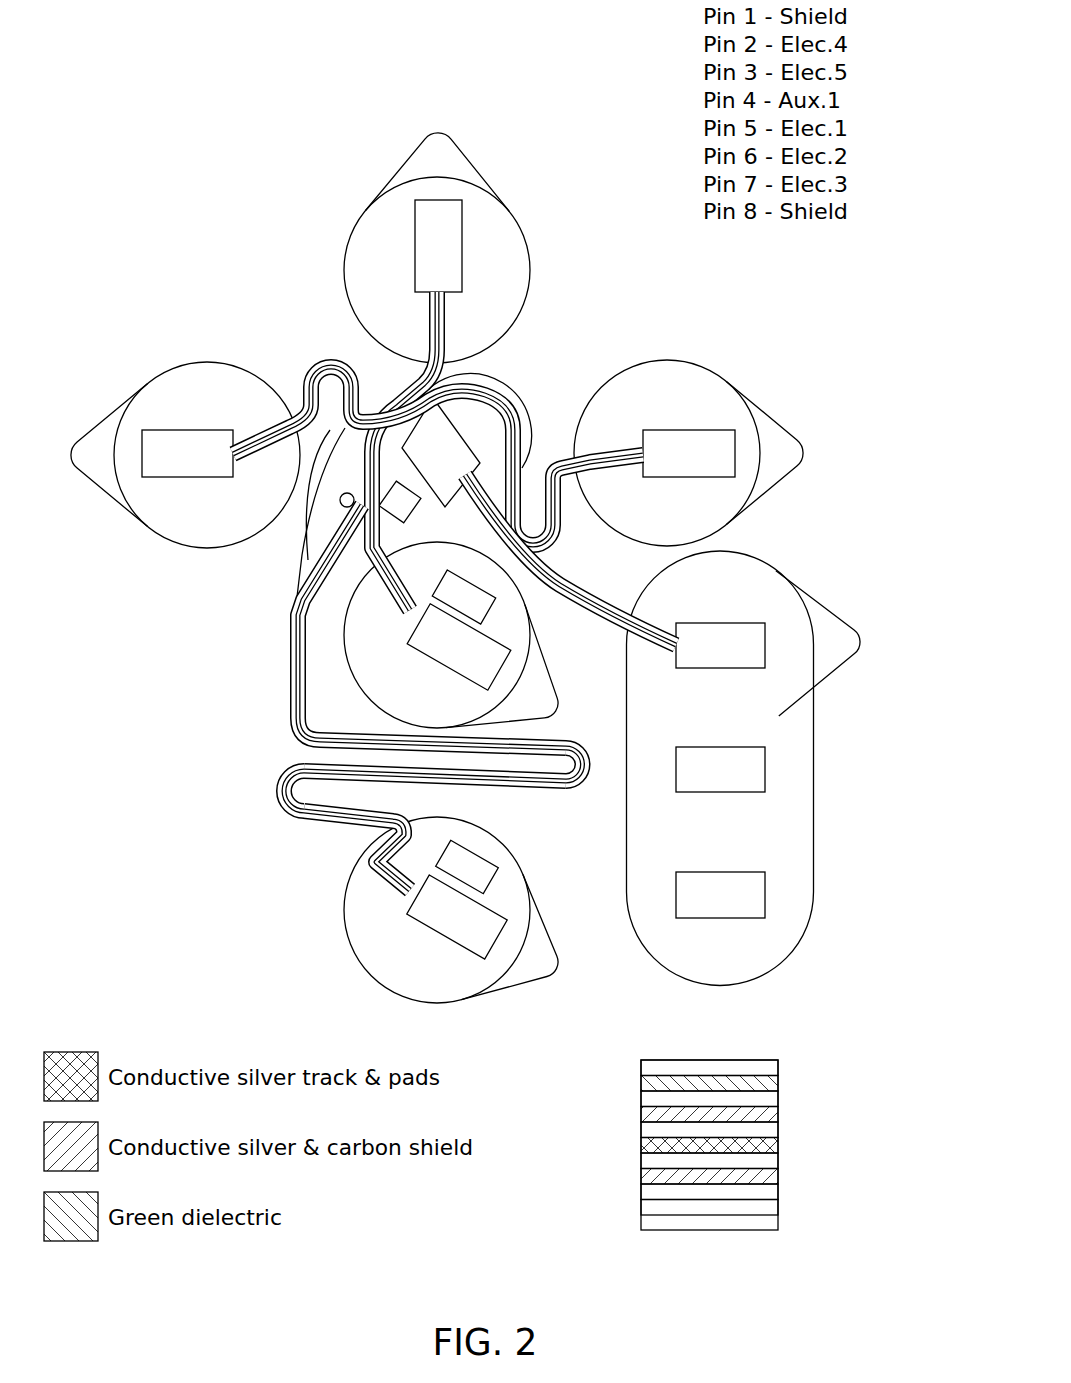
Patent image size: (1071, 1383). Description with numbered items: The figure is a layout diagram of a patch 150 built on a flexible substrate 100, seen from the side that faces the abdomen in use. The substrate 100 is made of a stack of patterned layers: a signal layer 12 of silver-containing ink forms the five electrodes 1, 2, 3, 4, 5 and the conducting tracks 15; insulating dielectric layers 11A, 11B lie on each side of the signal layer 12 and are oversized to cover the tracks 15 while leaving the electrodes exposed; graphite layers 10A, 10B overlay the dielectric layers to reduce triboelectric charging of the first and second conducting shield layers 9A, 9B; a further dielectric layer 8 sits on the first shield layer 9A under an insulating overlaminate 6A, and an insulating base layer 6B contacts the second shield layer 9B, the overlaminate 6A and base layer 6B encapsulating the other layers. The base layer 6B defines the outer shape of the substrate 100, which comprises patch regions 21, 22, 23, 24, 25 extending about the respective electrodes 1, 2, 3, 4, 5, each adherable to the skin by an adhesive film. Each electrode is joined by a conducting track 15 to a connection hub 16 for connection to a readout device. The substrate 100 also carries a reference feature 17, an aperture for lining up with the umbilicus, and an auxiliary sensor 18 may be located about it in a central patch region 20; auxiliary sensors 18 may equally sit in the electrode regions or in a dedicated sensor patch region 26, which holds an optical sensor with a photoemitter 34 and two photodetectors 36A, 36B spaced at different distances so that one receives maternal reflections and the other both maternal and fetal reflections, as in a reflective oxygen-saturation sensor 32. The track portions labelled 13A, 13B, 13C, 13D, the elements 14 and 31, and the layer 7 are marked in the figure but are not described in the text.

The flexible substrate 100 is at (205, 283).
The patch 150 is at (168, 335).
The electrode 1 is at (188, 432).
The electrode 2 is at (455, 265).
The electrode 3 is at (672, 478).
The electrode 4 is at (442, 665).
The electrode 5 is at (442, 935).
The electrode contact region 14 is at (530, 225).
The conducting track 15 is at (323, 352).
The connection hub 16 is at (460, 443).
The reference feature 17 is at (352, 466).
The auxiliary sensor 18 is at (460, 585).
The central patch region 20 is at (340, 507).
The patch region 21 is at (110, 515).
The patch region 22 is at (483, 150).
The patch region 23 is at (755, 515).
The patch region 24 is at (555, 668).
The patch region 25 is at (527, 884).
The dedicated sensor patch region 26 is at (815, 770).
The meander section 13A is at (310, 358).
The meander section 13B is at (540, 470).
The meander section 13C is at (280, 745).
The track section 13D is at (592, 598).
The meander bend 31 is at (576, 785).
The reflective SpO2 sensor 32 is at (283, 802).
The photoemitter 34 is at (720, 895).
The photodetector 36A is at (720, 769).
The photodetector 36B is at (720, 645).
The insulating overlaminate 6A is at (660, 1068).
The insulating base layer 6B is at (705, 1225).
The substrate 7 is at (660, 1232).
The insulating dielectric layer 8 is at (705, 1083).
The first conducting shield layer 9A is at (778, 1091).
The second conducting shield layer 9B is at (760, 1210).
The graphite layer 10A is at (778, 1107).
The graphite layer 10B is at (778, 1183).
The insulating dielectric layer 11A is at (778, 1122).
The insulating dielectric layer 11B is at (778, 1168).
The signal layer 12 is at (778, 1145).